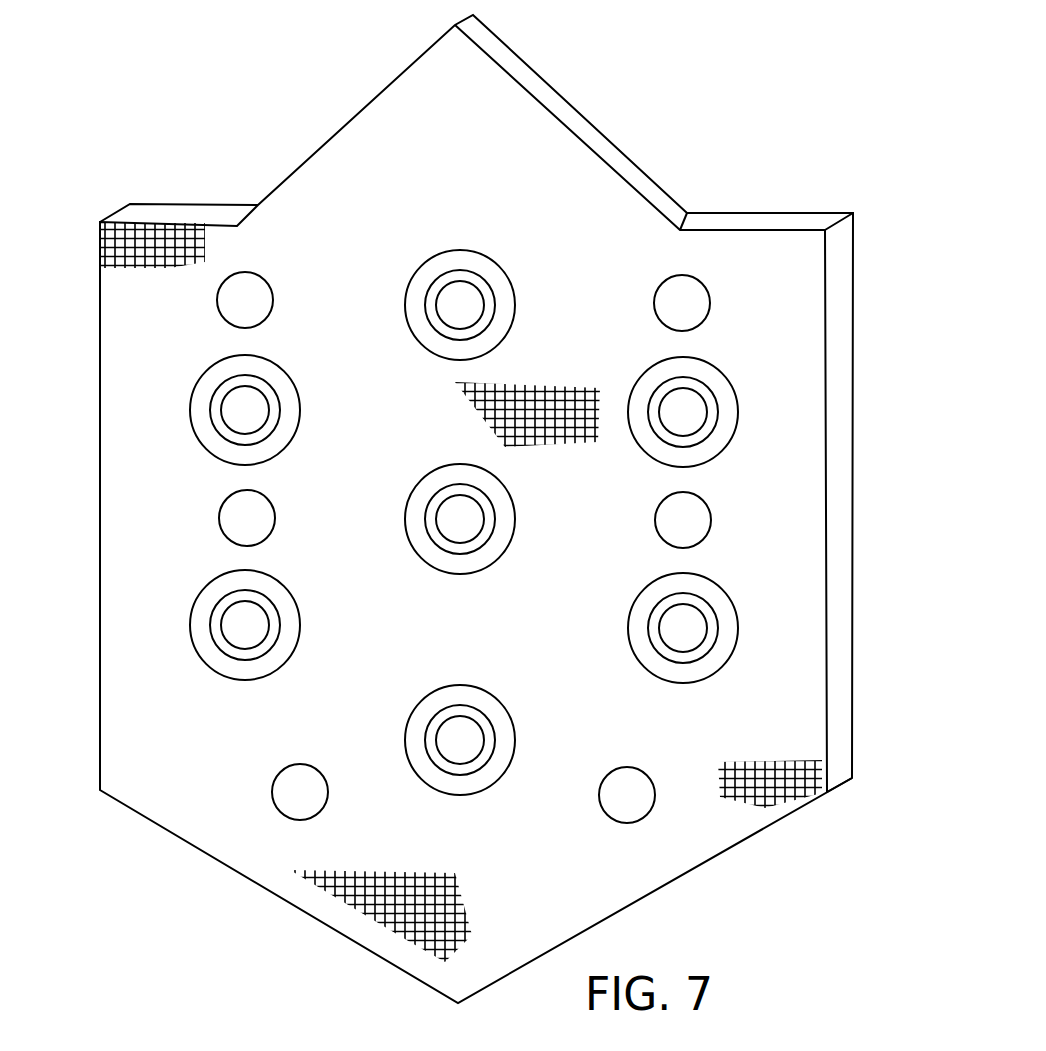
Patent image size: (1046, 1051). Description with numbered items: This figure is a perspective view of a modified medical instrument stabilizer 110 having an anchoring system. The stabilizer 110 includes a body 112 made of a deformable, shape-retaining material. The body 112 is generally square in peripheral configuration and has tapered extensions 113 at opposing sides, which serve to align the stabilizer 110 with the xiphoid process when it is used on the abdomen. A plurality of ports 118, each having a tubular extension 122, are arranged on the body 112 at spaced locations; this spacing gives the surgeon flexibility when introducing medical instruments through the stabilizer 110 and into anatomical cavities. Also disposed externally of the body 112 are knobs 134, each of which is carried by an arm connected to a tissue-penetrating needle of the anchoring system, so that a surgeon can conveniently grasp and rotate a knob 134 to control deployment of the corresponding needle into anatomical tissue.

The stabilizer 110 is at (677, 123).
The body 112 is at (790, 310).
The tapered extensions 113 is at (523, 103).
The ports 118 is at (460, 302).
The tubular extensions 122 is at (485, 288).
The knob 134 is at (690, 288).